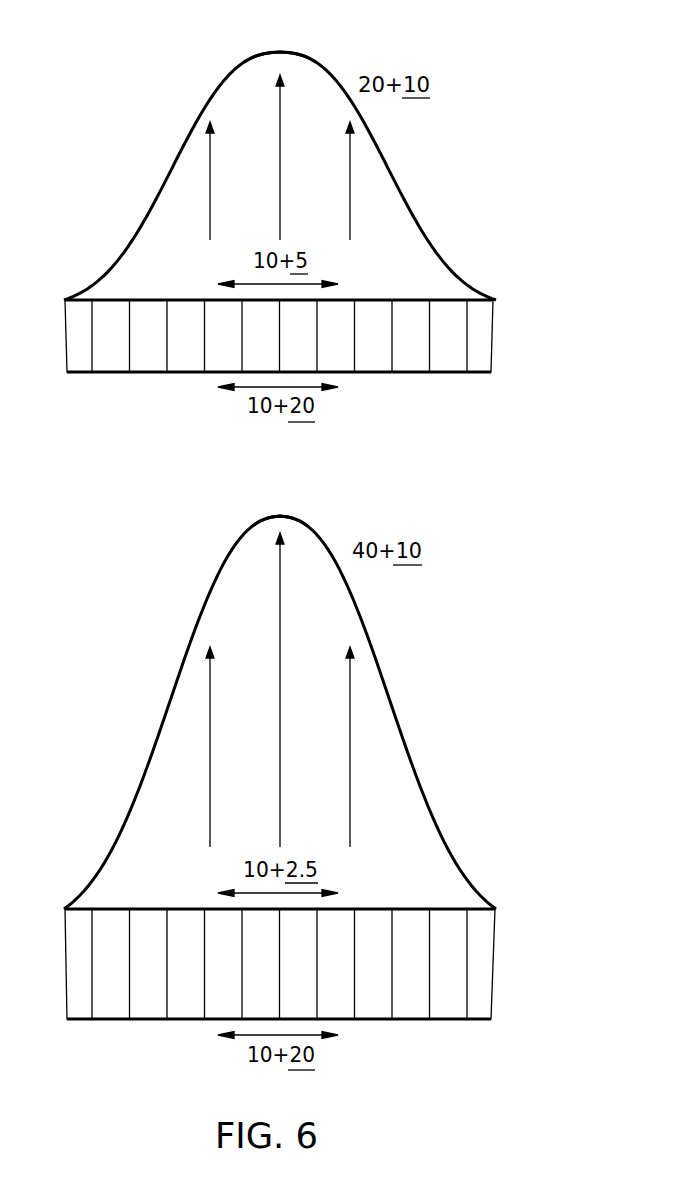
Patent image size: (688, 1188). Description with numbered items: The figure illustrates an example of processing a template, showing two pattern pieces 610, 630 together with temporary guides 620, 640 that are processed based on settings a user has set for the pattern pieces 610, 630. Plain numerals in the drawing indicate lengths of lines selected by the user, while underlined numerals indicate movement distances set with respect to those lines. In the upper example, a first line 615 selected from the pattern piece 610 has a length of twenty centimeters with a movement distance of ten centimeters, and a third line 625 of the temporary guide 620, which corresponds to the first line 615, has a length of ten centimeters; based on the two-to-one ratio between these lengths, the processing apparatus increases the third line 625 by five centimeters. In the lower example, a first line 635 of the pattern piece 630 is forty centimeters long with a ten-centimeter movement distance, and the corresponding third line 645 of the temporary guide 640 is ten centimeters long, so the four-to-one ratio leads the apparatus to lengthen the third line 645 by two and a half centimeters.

The pattern piece 610 is at (372, 170).
The first line 615 is at (315, 60).
The temporary guide 620 is at (482, 333).
The third line 625 is at (407, 300).
The pattern piece 630 is at (373, 704).
The first line 635 is at (307, 522).
The temporary guide 640 is at (482, 965).
The third line 645 is at (419, 909).